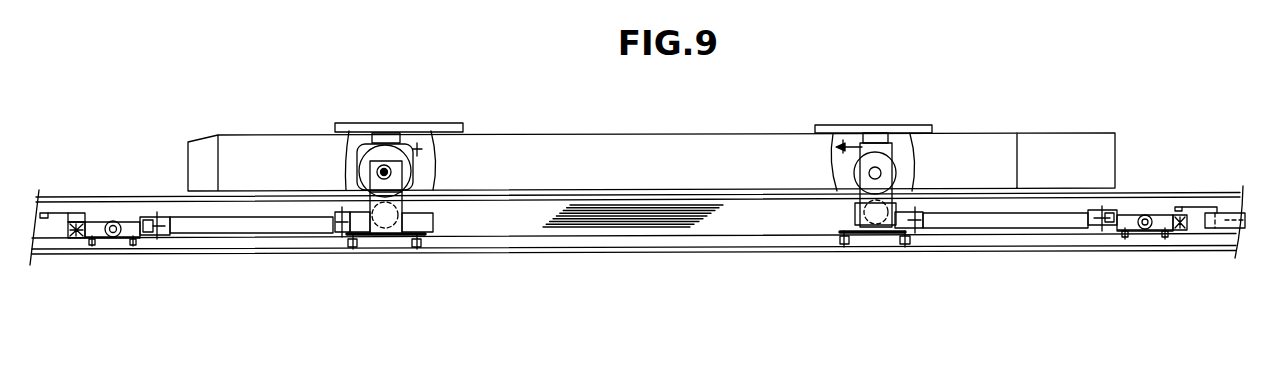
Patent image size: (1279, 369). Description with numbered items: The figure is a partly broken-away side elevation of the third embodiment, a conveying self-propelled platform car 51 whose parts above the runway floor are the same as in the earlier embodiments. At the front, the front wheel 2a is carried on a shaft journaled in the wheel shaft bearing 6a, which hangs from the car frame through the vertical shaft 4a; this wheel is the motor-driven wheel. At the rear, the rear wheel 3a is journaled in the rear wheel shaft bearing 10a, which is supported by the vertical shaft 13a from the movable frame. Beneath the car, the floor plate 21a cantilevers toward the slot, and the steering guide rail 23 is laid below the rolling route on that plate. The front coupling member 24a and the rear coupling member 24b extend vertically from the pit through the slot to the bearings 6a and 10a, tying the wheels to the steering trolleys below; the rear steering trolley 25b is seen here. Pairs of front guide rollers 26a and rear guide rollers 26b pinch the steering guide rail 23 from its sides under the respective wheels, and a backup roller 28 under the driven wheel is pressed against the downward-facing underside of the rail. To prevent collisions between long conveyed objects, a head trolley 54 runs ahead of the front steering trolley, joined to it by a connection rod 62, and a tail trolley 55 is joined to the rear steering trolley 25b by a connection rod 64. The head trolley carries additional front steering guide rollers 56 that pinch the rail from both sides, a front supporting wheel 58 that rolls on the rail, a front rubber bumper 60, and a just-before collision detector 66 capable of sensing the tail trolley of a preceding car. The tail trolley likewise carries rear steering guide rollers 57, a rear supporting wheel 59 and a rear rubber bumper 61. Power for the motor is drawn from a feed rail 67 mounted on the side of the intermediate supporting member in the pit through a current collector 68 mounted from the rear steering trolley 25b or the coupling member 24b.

The front wheel 2a is at (385, 192).
The rear wheel 3a is at (854, 171).
The vertical shaft 4a is at (385, 130).
The wheel shaft bearing 6a is at (352, 148).
The rear wheel shaft bearing 10a is at (892, 148).
The vertical shaft 13a is at (877, 132).
The floor plate 21a is at (527, 200).
The steering guide rail 23 is at (553, 246).
The front coupling member 24a is at (390, 222).
The rear coupling member 24b is at (877, 233).
The rear steering trolley 25b is at (887, 235).
The front guide rollers 26a is at (352, 247).
The rear guide rollers 26b is at (843, 238).
The backup roller 28 is at (384, 236).
The conveying self-propelled platform car 51 is at (688, 135).
The head trolley 54 is at (135, 222).
The tail trolley 55 is at (1160, 214).
The front steering guide rollers 56 is at (92, 246).
The rear steering guide rollers 57 is at (1125, 237).
The front supporting wheel 58 is at (113, 239).
The rear supporting wheel 59 is at (1135, 232).
The front rubber bumper 60 is at (78, 213).
The rear rubber bumper 61 is at (1193, 232).
The connection rod 62 is at (257, 227).
The connection rod 64 is at (1055, 217).
The just-before collision detector 66 is at (43, 213).
The feed rail 67 is at (680, 215).
The current collector 68 is at (855, 213).